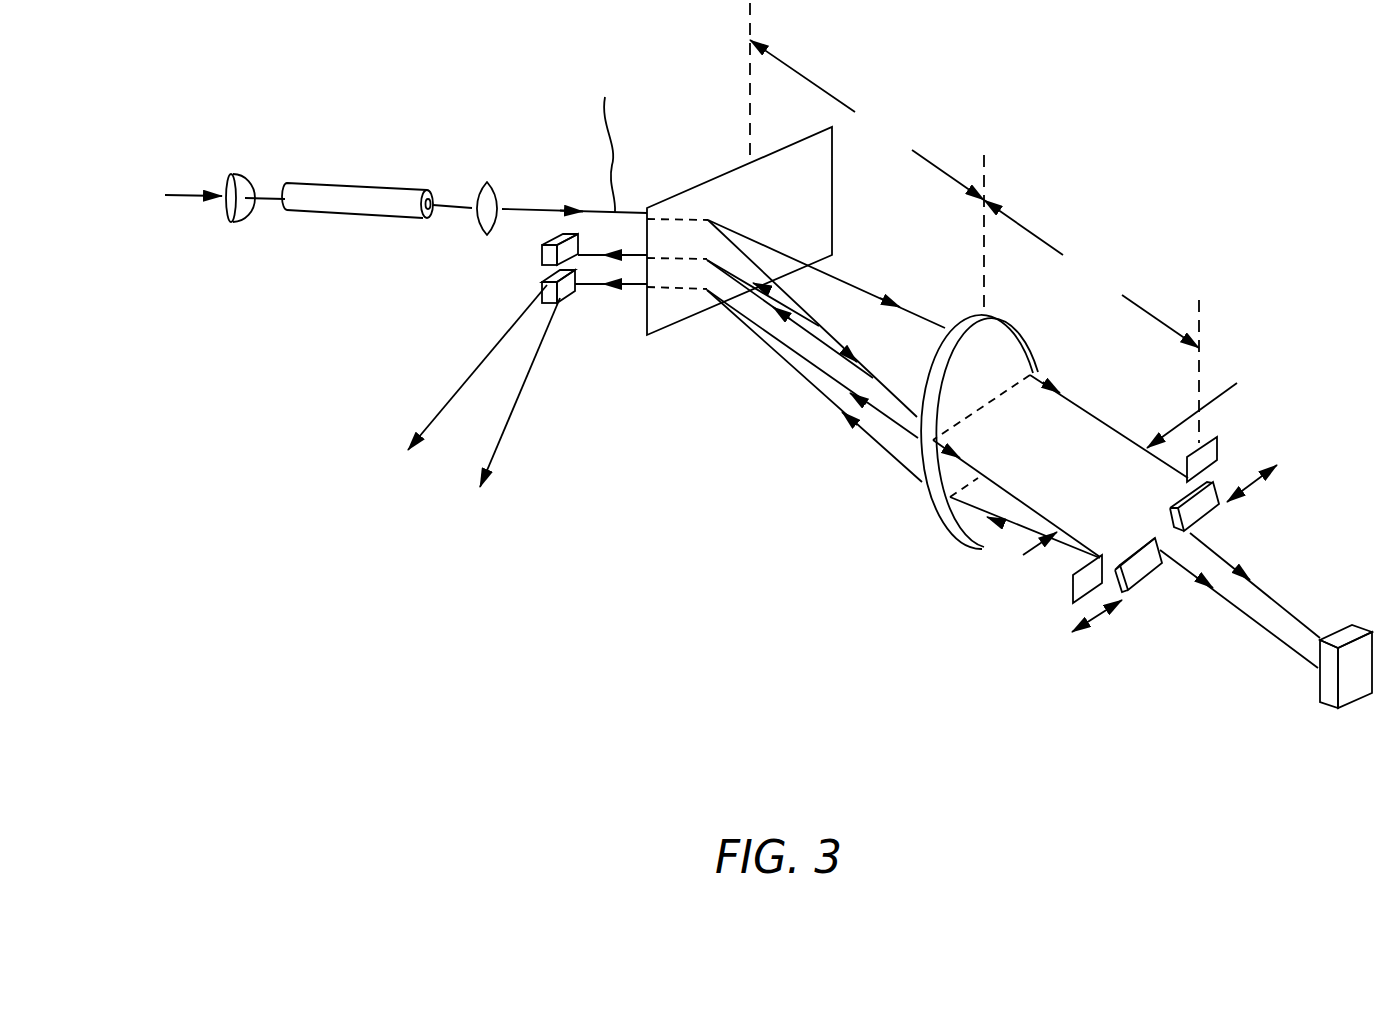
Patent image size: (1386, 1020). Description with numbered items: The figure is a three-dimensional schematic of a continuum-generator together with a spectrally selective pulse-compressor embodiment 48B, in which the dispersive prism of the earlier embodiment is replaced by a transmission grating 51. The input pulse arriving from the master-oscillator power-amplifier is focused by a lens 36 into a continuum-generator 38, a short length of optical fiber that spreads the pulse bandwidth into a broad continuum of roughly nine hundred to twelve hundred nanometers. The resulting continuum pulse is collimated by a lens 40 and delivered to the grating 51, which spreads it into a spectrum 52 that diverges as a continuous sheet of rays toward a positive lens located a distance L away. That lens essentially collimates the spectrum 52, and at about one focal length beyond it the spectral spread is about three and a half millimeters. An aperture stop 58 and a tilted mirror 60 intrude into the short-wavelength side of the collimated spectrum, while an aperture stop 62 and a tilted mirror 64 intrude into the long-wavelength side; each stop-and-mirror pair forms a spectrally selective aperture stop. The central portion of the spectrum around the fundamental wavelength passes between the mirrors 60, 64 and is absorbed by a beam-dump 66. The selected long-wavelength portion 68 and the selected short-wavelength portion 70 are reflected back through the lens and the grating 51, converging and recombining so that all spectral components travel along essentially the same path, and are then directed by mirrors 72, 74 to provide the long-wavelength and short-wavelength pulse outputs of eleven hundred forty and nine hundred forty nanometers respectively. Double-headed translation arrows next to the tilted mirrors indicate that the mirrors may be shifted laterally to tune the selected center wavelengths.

The spectrally selective pulse-compressor embodiment 48B is at (665, 595).
The lens 36 is at (250, 213).
The continuum-generator 38 is at (357, 188).
The lens 40 is at (493, 197).
The transmission grating 51 is at (722, 172).
The spectrum 52 is at (847, 293).
The aperture stop 58 is at (1073, 588).
The tilted mirror 60 is at (1140, 577).
The aperture stop 62 is at (1208, 465).
The tilted mirror 64 is at (1198, 521).
The beam-dump 66 is at (1327, 677).
The selected long-wavelength portion 68 is at (598, 255).
The selected short-wavelength portion 70 is at (637, 290).
The mirror 72 is at (542, 252).
The mirror 74 is at (542, 287).